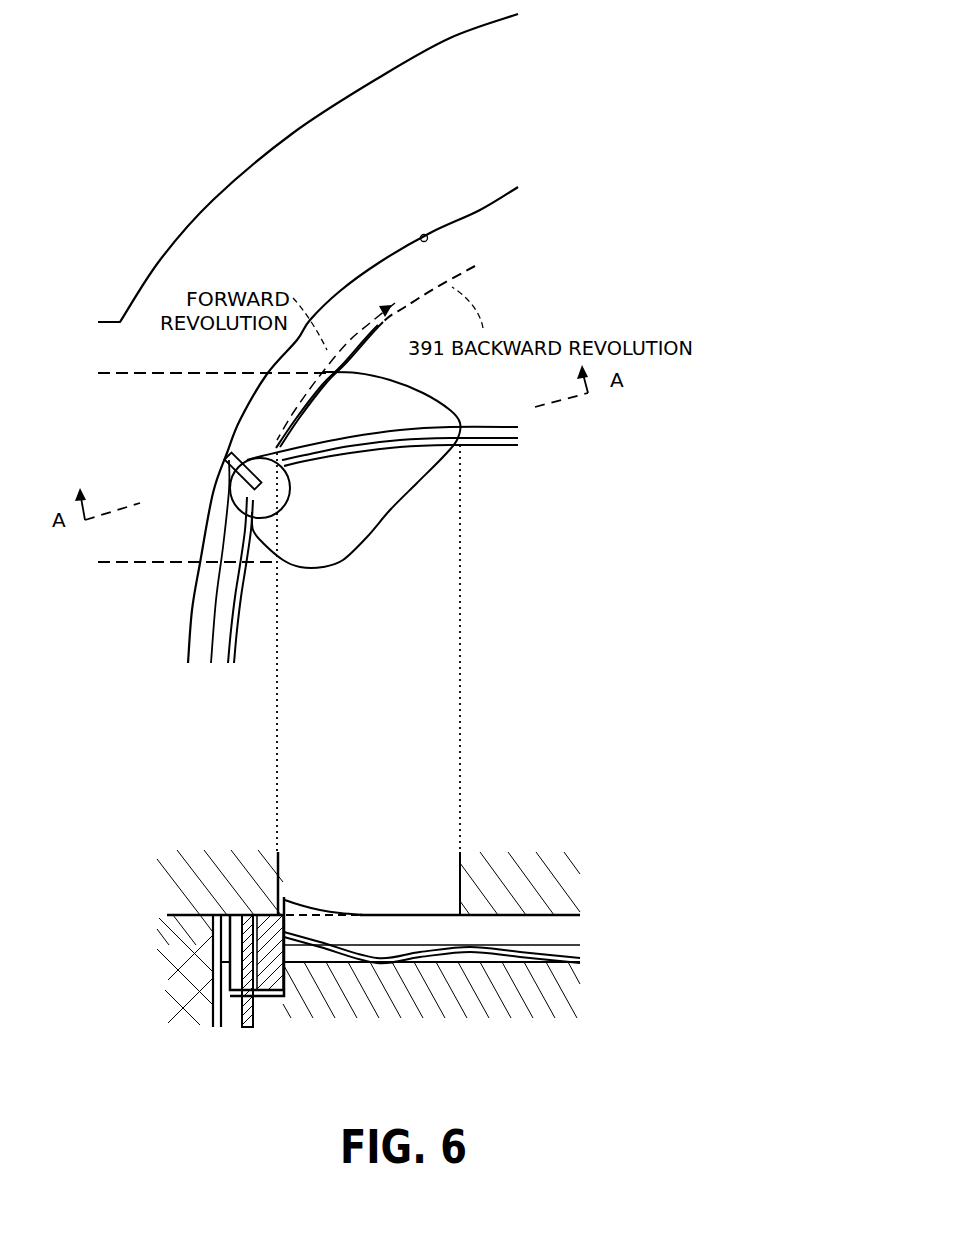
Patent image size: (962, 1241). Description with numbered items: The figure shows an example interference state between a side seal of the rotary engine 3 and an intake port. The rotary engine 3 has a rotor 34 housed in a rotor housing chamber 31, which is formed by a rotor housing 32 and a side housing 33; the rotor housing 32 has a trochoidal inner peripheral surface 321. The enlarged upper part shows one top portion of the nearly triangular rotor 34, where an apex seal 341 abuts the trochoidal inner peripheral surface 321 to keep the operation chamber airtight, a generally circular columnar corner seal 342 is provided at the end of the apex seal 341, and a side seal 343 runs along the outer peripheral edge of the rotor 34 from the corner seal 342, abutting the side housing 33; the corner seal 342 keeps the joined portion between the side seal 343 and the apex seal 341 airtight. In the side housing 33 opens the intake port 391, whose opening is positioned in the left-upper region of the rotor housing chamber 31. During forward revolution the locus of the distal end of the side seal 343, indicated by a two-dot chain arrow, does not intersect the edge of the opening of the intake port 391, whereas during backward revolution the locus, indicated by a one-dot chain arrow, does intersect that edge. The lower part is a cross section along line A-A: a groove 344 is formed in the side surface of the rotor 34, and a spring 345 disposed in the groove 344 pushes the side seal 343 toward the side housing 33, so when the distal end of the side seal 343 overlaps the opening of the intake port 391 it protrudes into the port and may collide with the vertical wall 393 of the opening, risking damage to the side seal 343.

The rotary engine 3 is at (700, 101).
The rotor housing chamber 31 is at (458, 236).
The rotor housing 32 is at (152, 268).
The trochoidal inner peripheral surface 321 is at (421, 235).
The side housing 33 is at (380, 290).
The rotor 34 is at (502, 545).
The apex seal 341 is at (226, 458).
The corner seal 342 is at (247, 494).
The side seal 343 is at (357, 455).
The groove 344 is at (312, 950).
The spring 345 is at (470, 948).
The intake port 391 is at (408, 360).
The vertical wall 393 is at (279, 862).